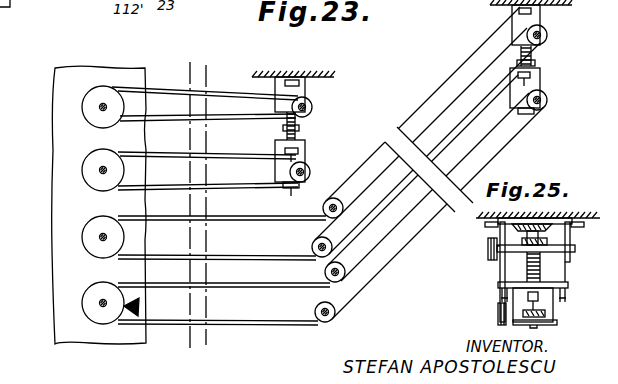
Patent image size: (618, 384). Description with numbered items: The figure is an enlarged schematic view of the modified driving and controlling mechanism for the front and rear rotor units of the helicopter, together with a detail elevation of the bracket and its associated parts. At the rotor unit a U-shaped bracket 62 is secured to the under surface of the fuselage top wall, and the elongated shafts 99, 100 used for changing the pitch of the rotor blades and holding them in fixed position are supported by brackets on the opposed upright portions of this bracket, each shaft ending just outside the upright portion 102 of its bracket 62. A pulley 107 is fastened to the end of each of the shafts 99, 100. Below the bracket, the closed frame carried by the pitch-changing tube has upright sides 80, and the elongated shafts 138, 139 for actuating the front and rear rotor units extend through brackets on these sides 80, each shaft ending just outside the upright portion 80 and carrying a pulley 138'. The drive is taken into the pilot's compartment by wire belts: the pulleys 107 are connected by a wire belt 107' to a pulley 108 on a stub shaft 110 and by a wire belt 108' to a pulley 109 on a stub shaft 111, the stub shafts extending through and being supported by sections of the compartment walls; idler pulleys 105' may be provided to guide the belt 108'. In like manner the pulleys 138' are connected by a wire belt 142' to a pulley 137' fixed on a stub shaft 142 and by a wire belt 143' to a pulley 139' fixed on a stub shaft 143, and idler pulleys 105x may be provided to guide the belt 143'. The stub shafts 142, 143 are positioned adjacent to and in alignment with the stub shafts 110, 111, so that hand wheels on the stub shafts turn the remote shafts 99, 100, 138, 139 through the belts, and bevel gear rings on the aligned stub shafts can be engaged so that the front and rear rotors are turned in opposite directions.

In FIG. 23, the U-shaped bracket 62 is at (309, 88).
In FIG. 25, the U-shaped bracket 62 is at (596, 246).
In FIG. 23, the sides of closed frame 80 is at (274, 147).
In FIG. 25, the sides of closed frame 80 is at (566, 310).
In FIG. 23, the elongated shaft 99 is at (313, 107).
In FIG. 23, the elongated shaft 100 is at (548, 37).
In FIG. 25, the elongated shaft 100 is at (517, 270).
In FIG. 23, the upright portion of bracket 102 is at (284, 77).
In FIG. 23, the idler pulleys 105' is at (303, 227).
In FIG. 23, the idler pulleys 105x is at (340, 264).
In FIG. 23, the pulley 107 is at (435, 74).
In FIG. 25, the pulley 107 is at (470, 253).
In FIG. 23, the wire belt 107' is at (205, 76).
In FIG. 23, the pulley 108 is at (103, 85).
In FIG. 23, the wire belt 108' is at (222, 205).
In FIG. 25, the wire belt 108' is at (471, 242).
In FIG. 23, the pulley 109 is at (96, 240).
In FIG. 23, the stub shaft 110 is at (99, 107).
In FIG. 23, the stub shaft 111 is at (106, 249).
In FIG. 23, the pulley 137' is at (66, 170).
In FIG. 23, the elongated shaft 138 is at (319, 165).
In FIG. 23, the pulley 138' is at (441, 152).
In FIG. 25, the pulley 138' is at (472, 312).
In FIG. 23, the elongated shaft 139 is at (557, 100).
In FIG. 25, the elongated shaft 139 is at (505, 325).
In FIG. 23, the pulley 139' is at (88, 326).
In FIG. 23, the stub shaft 142 is at (150, 207).
In FIG. 23, the wire belt 142' is at (207, 143).
In FIG. 23, the stub shaft 143 is at (127, 336).
In FIG. 23, the wire belt 143' is at (218, 339).
In FIG. 25, the wire belt 143' is at (473, 304).